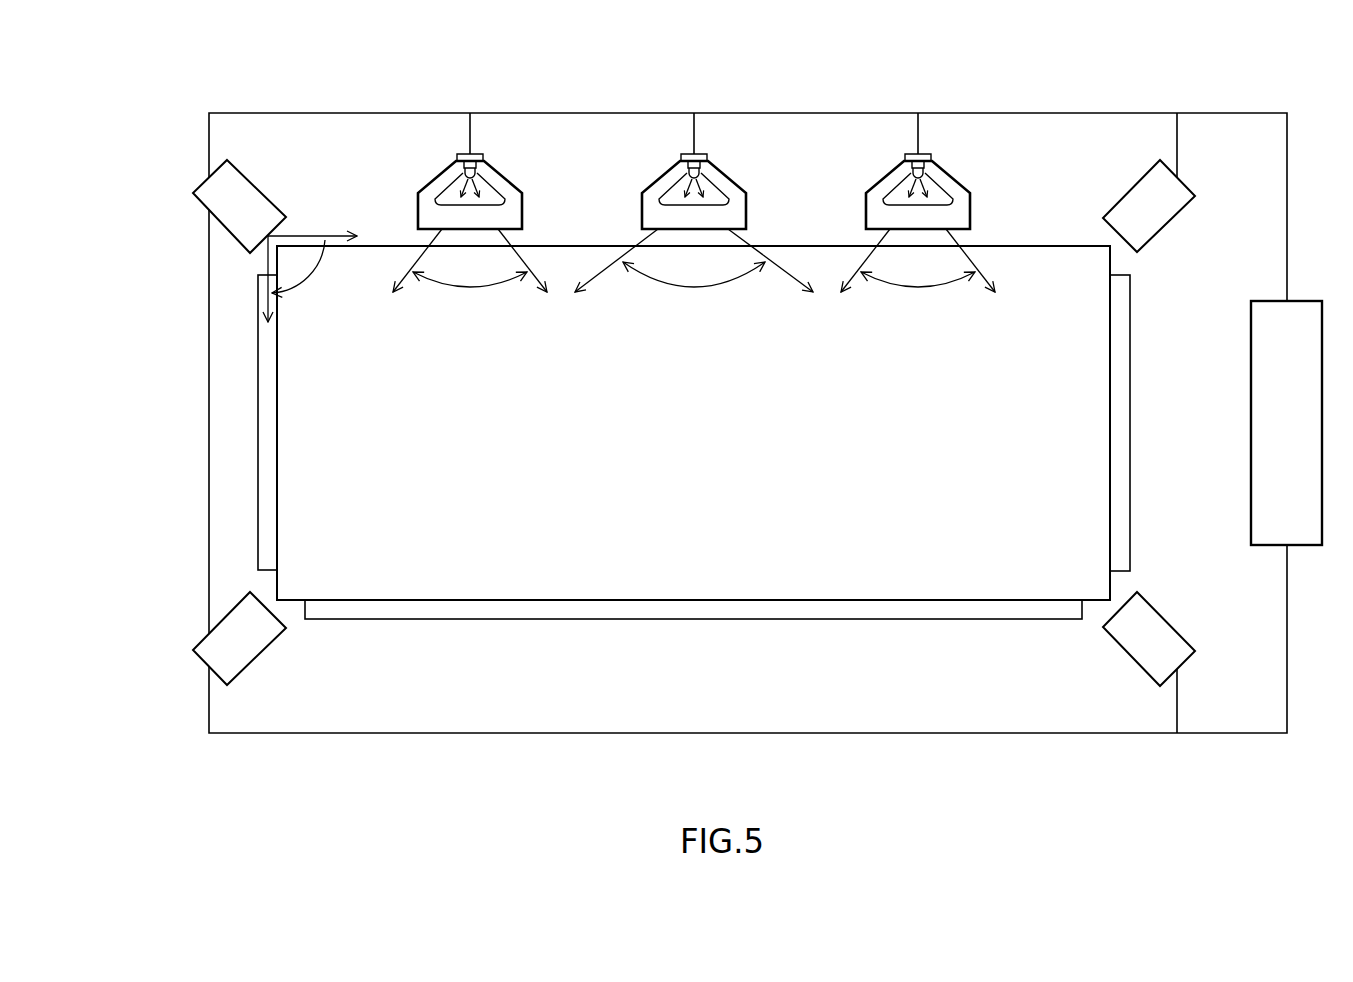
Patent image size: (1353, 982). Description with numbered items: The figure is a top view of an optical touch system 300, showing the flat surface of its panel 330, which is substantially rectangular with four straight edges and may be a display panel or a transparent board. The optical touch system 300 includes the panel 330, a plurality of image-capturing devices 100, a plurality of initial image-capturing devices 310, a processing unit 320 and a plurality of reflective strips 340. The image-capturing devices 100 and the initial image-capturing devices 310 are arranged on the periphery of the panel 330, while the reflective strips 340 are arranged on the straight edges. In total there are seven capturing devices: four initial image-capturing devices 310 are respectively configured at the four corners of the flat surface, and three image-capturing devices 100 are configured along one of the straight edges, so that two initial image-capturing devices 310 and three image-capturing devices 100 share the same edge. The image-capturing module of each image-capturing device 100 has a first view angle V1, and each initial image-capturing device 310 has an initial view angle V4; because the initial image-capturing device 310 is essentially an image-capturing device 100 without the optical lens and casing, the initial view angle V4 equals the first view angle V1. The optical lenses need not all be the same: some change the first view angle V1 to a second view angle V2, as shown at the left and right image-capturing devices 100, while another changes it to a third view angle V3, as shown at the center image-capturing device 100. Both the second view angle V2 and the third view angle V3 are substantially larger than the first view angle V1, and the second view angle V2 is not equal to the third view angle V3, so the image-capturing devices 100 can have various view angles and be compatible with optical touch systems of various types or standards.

The optical touch system 300 is at (151, 131).
The image-capturing device 100 is at (497, 181).
The initial image-capturing device 310 is at (248, 178).
The processing unit 320 is at (1307, 301).
The panel 330 is at (313, 350).
The reflective strip 340 is at (270, 422).
The first view angle V1 is at (464, 203).
The second view angle V2 is at (694, 273).
The third view angle V3 is at (694, 273).
The initial view angle V4 is at (312, 279).